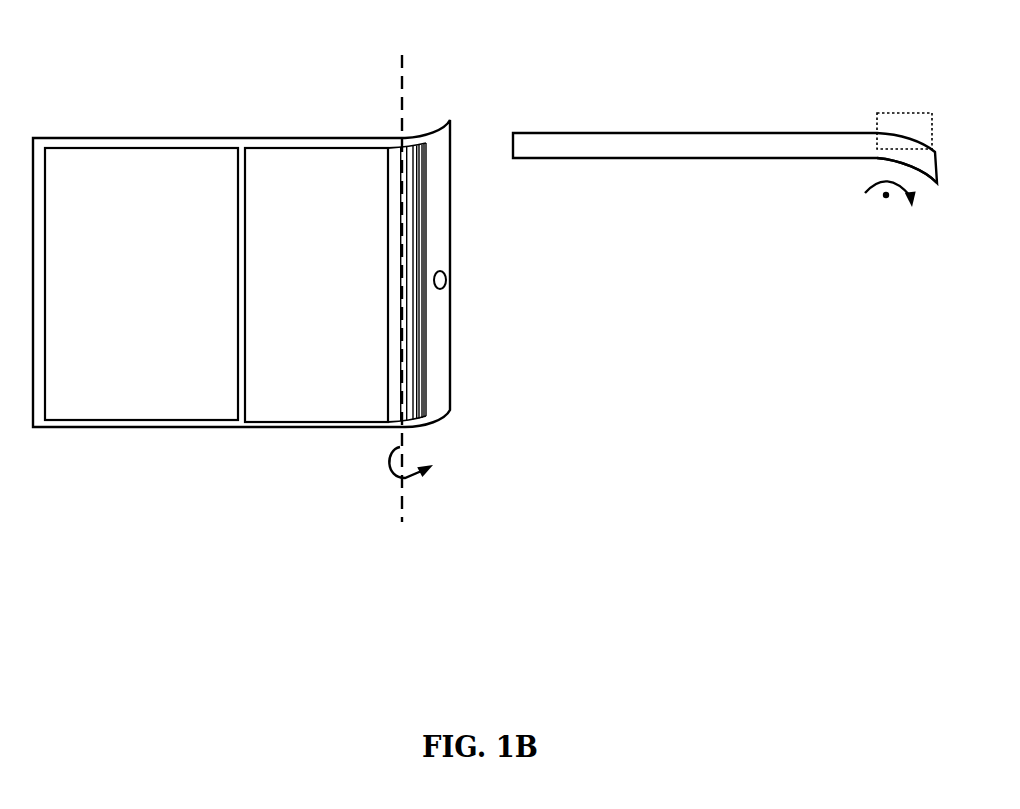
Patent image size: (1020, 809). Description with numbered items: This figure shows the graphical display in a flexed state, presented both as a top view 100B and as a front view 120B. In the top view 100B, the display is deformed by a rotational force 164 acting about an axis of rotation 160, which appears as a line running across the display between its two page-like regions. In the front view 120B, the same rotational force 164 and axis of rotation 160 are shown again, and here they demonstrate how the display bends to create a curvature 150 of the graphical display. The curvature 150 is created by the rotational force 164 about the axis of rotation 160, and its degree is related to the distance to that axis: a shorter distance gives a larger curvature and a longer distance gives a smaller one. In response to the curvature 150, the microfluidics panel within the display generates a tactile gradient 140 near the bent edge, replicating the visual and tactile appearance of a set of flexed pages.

The top view of the graphical display in a flexed state 100B is at (238, 119).
The front view of the graphical display in a flexed state 120B is at (737, 121).
The tactile gradient 140 is at (930, 102).
The curvature 150 is at (867, 166).
The axis of rotation 160 is at (400, 533).
The rotational force 164 is at (449, 438).